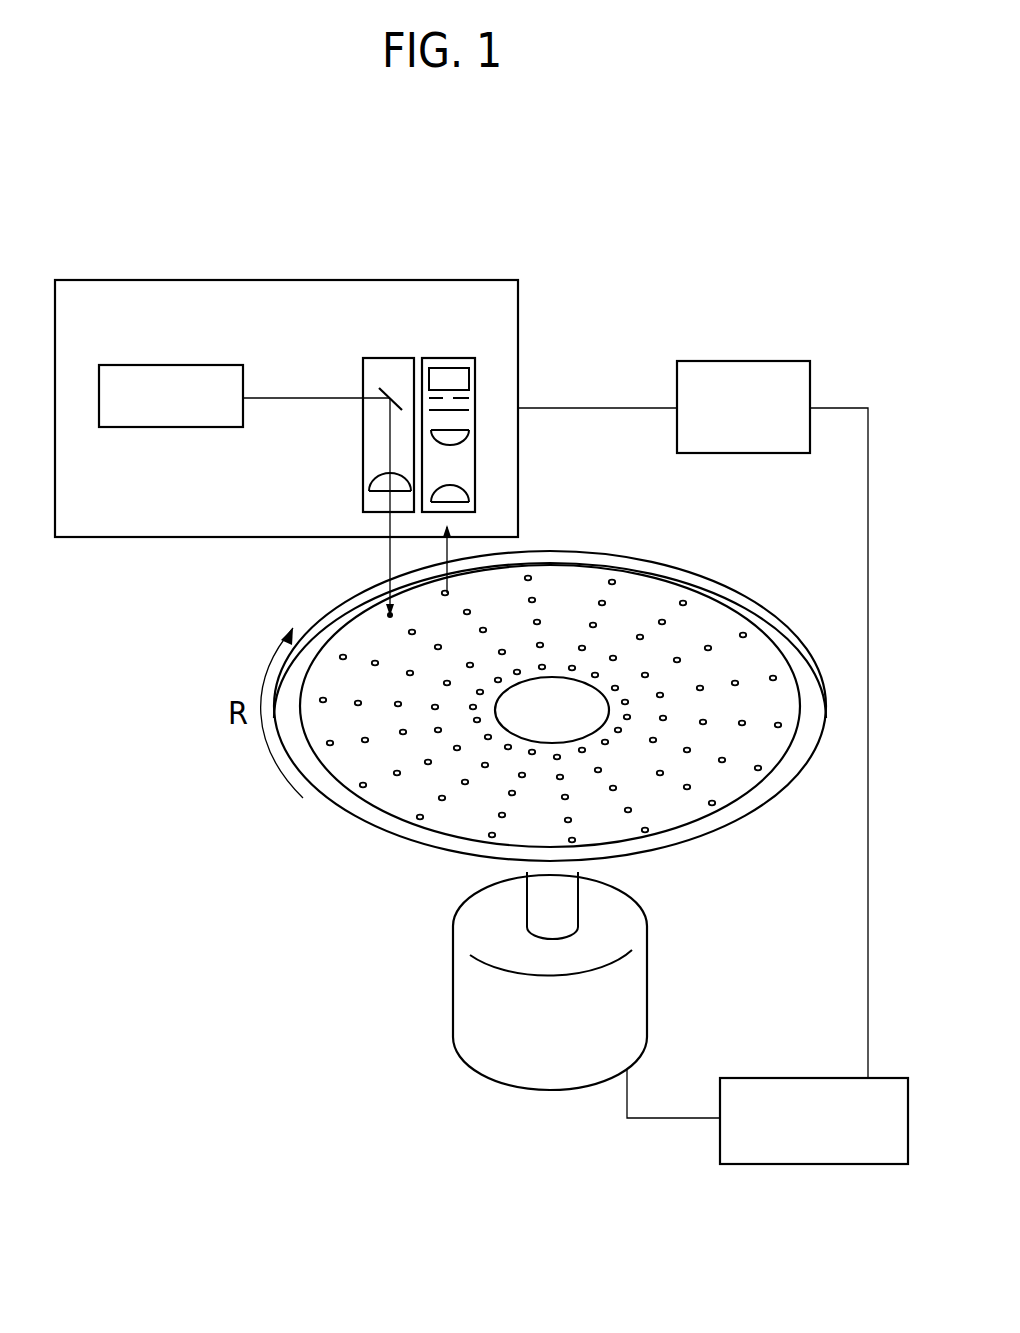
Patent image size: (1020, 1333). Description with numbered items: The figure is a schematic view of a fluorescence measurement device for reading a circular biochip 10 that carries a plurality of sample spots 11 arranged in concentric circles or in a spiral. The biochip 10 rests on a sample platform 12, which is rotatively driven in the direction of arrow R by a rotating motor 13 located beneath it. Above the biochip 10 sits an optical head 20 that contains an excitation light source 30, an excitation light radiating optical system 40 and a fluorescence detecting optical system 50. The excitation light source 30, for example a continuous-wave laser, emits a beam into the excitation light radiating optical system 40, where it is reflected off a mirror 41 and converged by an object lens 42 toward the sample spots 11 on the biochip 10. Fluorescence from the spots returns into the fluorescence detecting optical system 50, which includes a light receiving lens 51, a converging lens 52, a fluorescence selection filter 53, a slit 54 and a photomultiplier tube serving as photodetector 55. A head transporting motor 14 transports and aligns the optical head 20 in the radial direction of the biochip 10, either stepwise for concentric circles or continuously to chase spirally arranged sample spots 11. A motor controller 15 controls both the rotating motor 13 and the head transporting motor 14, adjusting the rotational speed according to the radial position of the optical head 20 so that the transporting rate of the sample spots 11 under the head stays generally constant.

The circular biochip 10 is at (702, 820).
The sample spots 11 is at (440, 800).
The sample platform 12 is at (430, 852).
The rotating motor 13 is at (470, 1031).
The head transporting motor 14 is at (772, 364).
The motor controller 15 is at (827, 1158).
The optical head 20 is at (285, 279).
The excitation light source 30 is at (152, 367).
The excitation light radiating optical system 40 is at (363, 360).
The mirror 41 is at (381, 387).
The object lens 42 is at (370, 487).
The fluorescence detecting optical system 50 is at (475, 473).
The light receiving lens 51 is at (455, 497).
The converging lens 52 is at (455, 440).
The fluorescence selection filter 53 is at (470, 413).
The slit 54 is at (468, 398).
The photodetector 55 is at (453, 377).